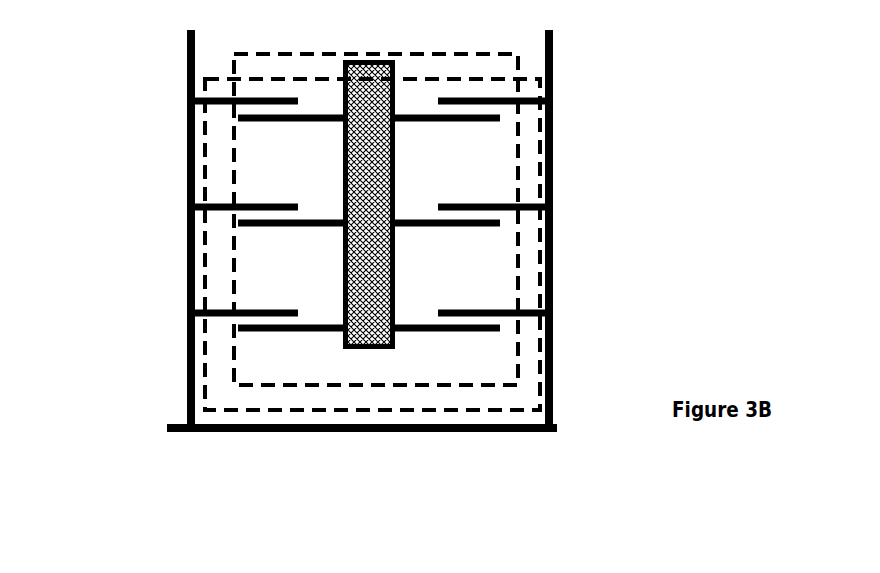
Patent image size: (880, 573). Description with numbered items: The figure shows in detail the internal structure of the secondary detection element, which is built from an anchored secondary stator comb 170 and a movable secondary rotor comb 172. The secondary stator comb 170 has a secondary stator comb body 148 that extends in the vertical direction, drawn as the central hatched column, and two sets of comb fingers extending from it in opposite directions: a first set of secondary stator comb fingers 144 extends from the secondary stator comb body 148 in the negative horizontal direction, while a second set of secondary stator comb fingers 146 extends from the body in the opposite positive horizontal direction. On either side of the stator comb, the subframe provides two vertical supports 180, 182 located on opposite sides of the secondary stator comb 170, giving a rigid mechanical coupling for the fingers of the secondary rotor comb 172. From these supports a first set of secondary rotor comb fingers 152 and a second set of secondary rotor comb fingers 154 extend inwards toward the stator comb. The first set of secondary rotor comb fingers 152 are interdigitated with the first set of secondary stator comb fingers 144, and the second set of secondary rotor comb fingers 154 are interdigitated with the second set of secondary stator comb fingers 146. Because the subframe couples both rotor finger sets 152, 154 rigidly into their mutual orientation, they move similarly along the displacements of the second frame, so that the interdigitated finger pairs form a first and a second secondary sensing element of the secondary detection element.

The first set of secondary stator comb fingers 144 is at (263, 121).
The second set of secondary stator comb fingers 146 is at (470, 121).
The secondary stator comb body 148 is at (373, 350).
The first set of secondary rotor comb fingers 152 is at (245, 99).
The second set of secondary rotor comb fingers 154 is at (490, 109).
The secondary stator comb 170 is at (516, 388).
The secondary rotor comb 172 is at (555, 101).
The vertical support 180 is at (555, 43).
The vertical support 182 is at (187, 62).